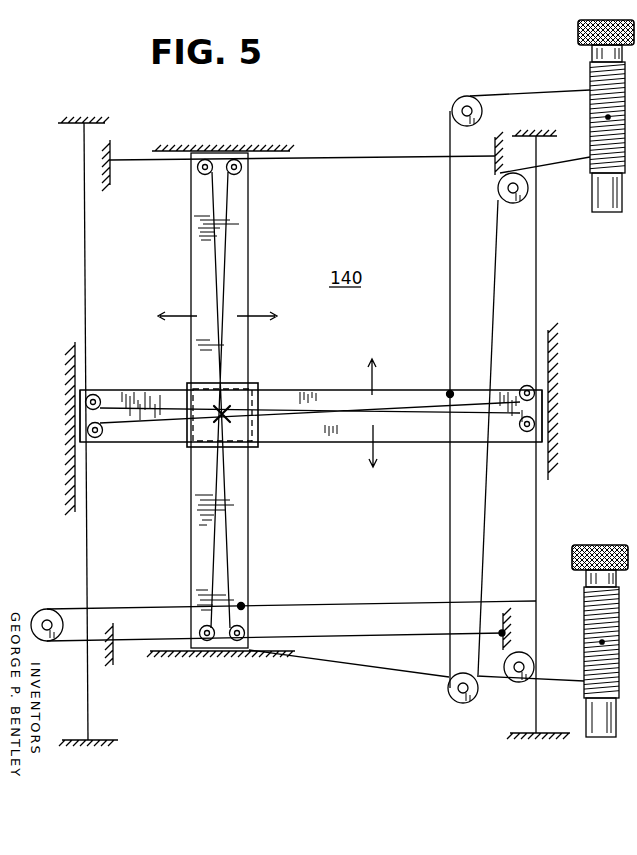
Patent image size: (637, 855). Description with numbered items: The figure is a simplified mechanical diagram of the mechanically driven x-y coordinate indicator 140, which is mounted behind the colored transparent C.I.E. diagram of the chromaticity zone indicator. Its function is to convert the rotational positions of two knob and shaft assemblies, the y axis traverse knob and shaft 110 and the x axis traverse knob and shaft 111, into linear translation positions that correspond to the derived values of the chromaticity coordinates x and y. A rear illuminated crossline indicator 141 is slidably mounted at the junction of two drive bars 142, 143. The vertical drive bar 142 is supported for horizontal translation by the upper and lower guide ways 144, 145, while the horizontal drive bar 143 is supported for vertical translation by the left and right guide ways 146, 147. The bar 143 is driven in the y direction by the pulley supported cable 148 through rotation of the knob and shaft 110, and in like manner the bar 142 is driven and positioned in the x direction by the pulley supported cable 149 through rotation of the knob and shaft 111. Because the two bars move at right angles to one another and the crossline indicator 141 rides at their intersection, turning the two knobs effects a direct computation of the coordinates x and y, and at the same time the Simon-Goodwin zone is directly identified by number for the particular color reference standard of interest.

The knob and shaft 110 is at (579, 33).
The knob and shaft 111 is at (595, 545).
The x-y coordinate indicator 140 is at (345, 281).
The crossline indicator 141 is at (222, 400).
The drive bar 142 is at (240, 270).
The drive bar 143 is at (378, 388).
The guide way 144 is at (224, 147).
The guide way 145 is at (234, 657).
The guide way 146 is at (72, 422).
The guide way 147 is at (548, 405).
The pulley supported cable 148 is at (450, 220).
The pulley supported cable 149 is at (316, 604).